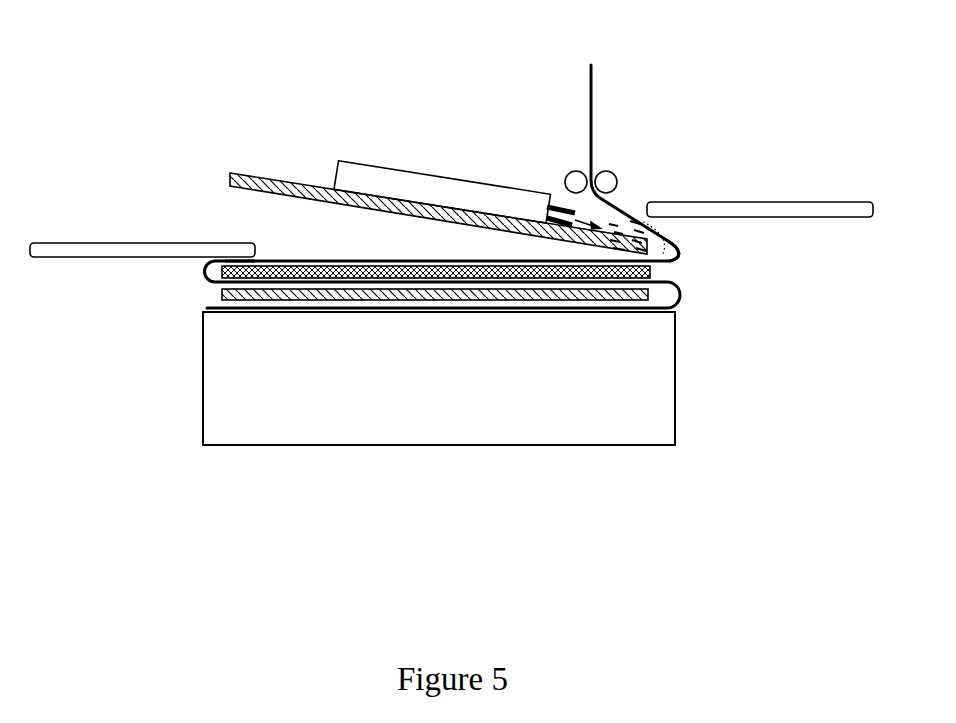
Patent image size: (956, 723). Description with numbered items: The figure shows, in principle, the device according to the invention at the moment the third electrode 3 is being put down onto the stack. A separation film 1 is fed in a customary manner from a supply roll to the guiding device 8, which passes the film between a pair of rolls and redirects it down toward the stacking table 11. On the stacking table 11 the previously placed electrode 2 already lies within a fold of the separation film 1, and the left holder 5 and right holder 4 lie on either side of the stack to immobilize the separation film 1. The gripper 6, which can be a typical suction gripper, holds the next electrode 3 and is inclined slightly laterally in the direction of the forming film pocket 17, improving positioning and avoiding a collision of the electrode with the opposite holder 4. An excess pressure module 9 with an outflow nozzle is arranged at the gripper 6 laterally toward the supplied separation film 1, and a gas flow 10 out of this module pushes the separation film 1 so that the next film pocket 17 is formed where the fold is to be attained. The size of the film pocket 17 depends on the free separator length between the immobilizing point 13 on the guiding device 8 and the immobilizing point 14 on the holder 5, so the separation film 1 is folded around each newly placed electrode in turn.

The separation film 1 is at (587, 95).
The electrode 2 is at (280, 183).
The electrode 3 is at (651, 275).
The right holder 4 is at (760, 210).
The left holder 5 is at (130, 248).
The gripper 6 is at (405, 177).
The guiding device 8 is at (615, 177).
The excess pressure module with outflow nozzle 9 is at (562, 205).
The gas flow 10 is at (625, 226).
The stacking table 11 is at (670, 410).
The immobilizing point of the film guide 13 is at (602, 170).
The immobilizing point of the holder 14 is at (240, 261).
The film pocket 17 is at (683, 257).